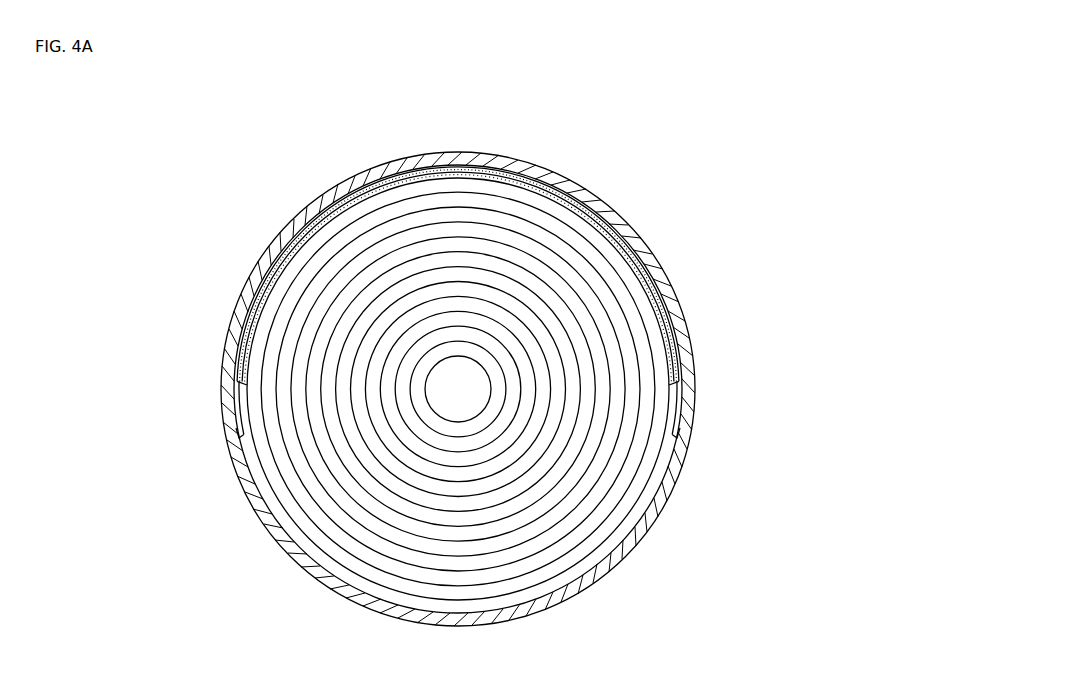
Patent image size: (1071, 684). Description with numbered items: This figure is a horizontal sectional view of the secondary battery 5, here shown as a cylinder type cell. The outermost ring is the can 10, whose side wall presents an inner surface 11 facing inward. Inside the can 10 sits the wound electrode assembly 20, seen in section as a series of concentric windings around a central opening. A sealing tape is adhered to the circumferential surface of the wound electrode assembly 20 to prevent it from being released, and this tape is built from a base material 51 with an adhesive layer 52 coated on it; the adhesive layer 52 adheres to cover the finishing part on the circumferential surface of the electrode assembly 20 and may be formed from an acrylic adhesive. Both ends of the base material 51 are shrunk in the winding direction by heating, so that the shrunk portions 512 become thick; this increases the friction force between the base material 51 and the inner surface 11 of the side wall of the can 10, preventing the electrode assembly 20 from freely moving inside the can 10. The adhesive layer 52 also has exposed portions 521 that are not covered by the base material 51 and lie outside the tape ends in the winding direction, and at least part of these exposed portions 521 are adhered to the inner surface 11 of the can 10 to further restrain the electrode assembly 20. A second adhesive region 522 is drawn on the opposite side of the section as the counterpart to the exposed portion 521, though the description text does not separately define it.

The secondary battery 5 is at (690, 180).
The can 10 is at (673, 294).
The inner surface 11 is at (242, 487).
The electrode assembly 20 is at (556, 476).
The base material 51 is at (300, 227).
The adhesive layer 52 is at (268, 272).
The shrunk portions 512 is at (237, 380).
The exposed portions 521 is at (237, 421).
The second end 522 is at (690, 421).